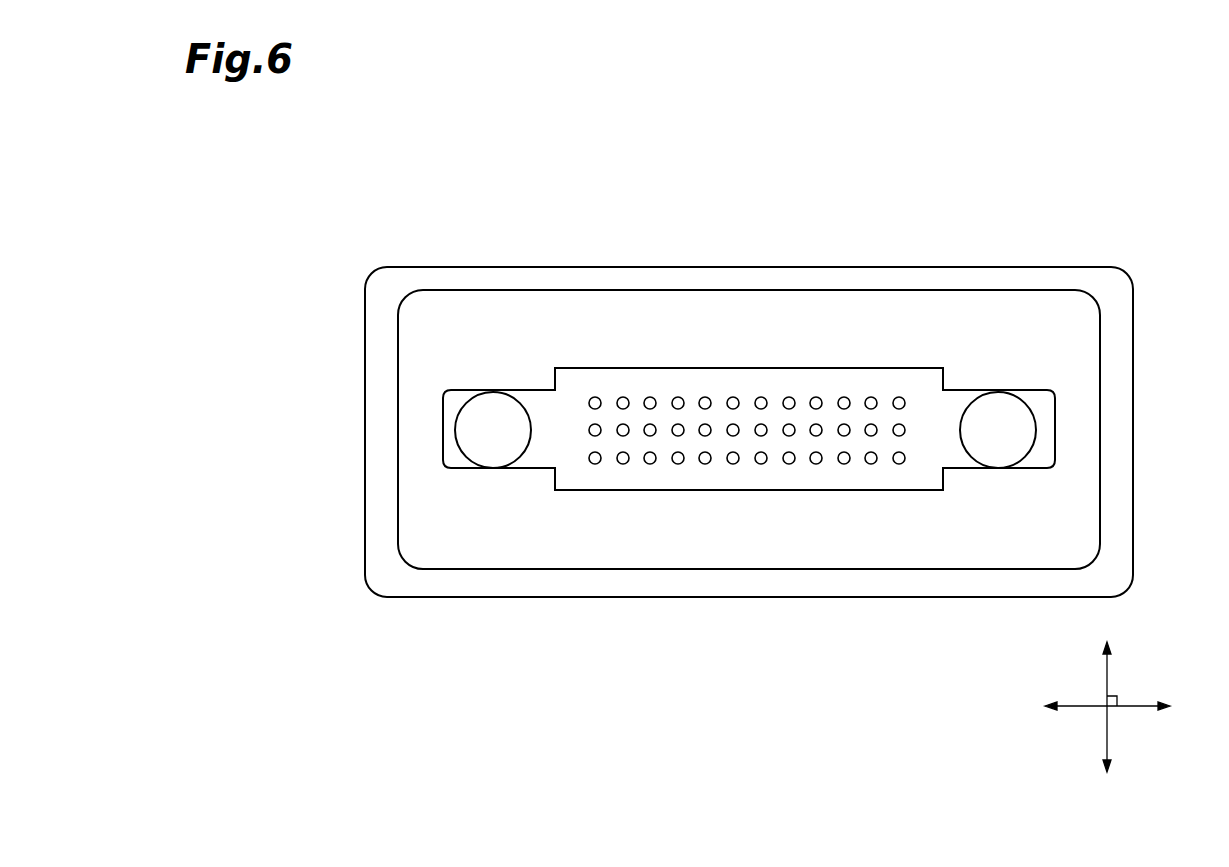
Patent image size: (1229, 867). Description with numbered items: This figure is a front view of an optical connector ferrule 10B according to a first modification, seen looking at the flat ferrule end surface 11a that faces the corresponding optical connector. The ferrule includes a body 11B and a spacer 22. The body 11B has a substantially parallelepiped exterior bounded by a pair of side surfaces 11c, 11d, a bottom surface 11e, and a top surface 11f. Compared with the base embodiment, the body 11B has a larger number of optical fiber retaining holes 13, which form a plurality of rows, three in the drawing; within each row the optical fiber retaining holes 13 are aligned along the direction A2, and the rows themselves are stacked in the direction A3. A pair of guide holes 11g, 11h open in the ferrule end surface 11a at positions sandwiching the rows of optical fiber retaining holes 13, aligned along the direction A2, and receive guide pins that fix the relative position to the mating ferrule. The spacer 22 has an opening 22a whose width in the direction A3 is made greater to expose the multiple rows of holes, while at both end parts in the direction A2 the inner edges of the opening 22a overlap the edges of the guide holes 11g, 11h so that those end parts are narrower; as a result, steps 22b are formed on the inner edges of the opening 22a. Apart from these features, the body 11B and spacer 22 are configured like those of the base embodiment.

The optical connector ferrule 10B is at (1077, 153).
The body 11B is at (1053, 268).
The ferrule end surface 11a is at (918, 384).
The side surface 11c is at (398, 465).
The side surface 11d is at (1100, 416).
The bottom surface 11e is at (760, 570).
The top surface 11f is at (729, 290).
The guide hole 11g is at (490, 457).
The guide hole 11h is at (988, 458).
The optical fiber retaining holes 13 is at (899, 397).
The spacer 22 is at (875, 557).
The opening 22a is at (597, 378).
The steps 22b is at (567, 370).
The direction A2 is at (1143, 708).
The direction A3 is at (1110, 677).